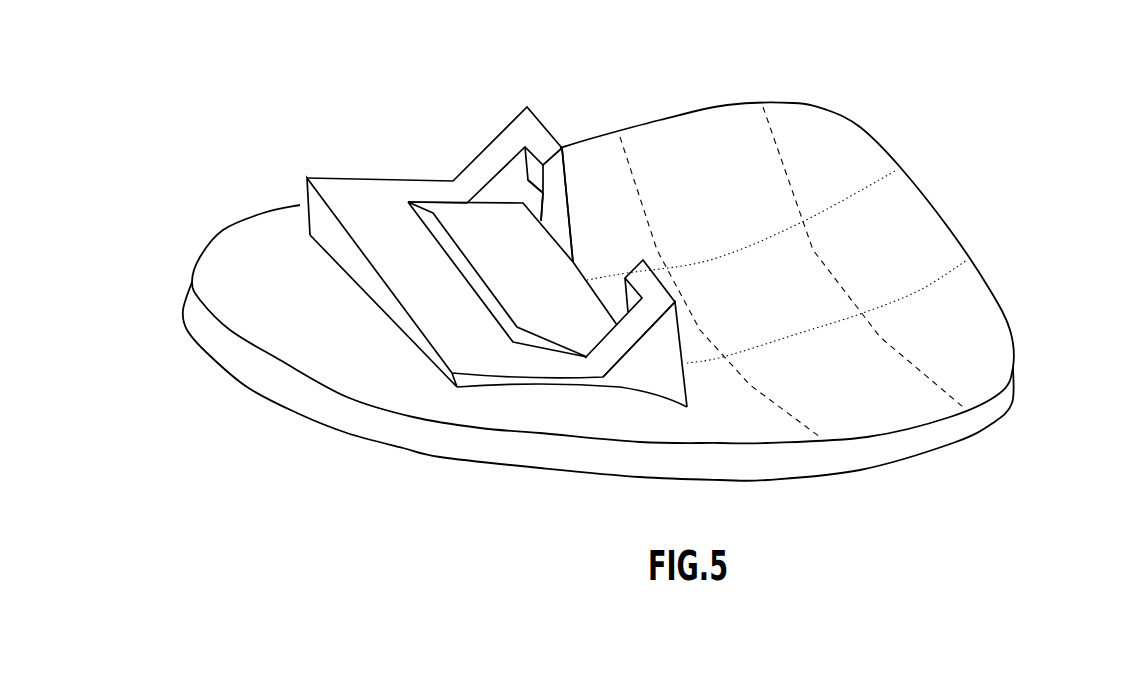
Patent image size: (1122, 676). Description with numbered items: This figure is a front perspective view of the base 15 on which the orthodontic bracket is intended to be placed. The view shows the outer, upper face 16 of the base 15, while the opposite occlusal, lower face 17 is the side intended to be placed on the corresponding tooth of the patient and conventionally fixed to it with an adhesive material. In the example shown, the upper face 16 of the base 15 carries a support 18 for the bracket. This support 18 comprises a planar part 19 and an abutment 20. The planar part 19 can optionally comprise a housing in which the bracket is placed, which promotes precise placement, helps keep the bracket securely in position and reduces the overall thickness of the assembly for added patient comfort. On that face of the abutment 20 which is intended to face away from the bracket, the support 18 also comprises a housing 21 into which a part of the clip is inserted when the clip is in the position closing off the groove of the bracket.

The base 15 is at (1004, 282).
The outer (upper) face 16 is at (745, 137).
The occlusal (lower) face 17 is at (850, 476).
The support 18 is at (323, 215).
The planar part 19 is at (420, 247).
The abutment 20 is at (495, 158).
The housing 21 is at (553, 217).